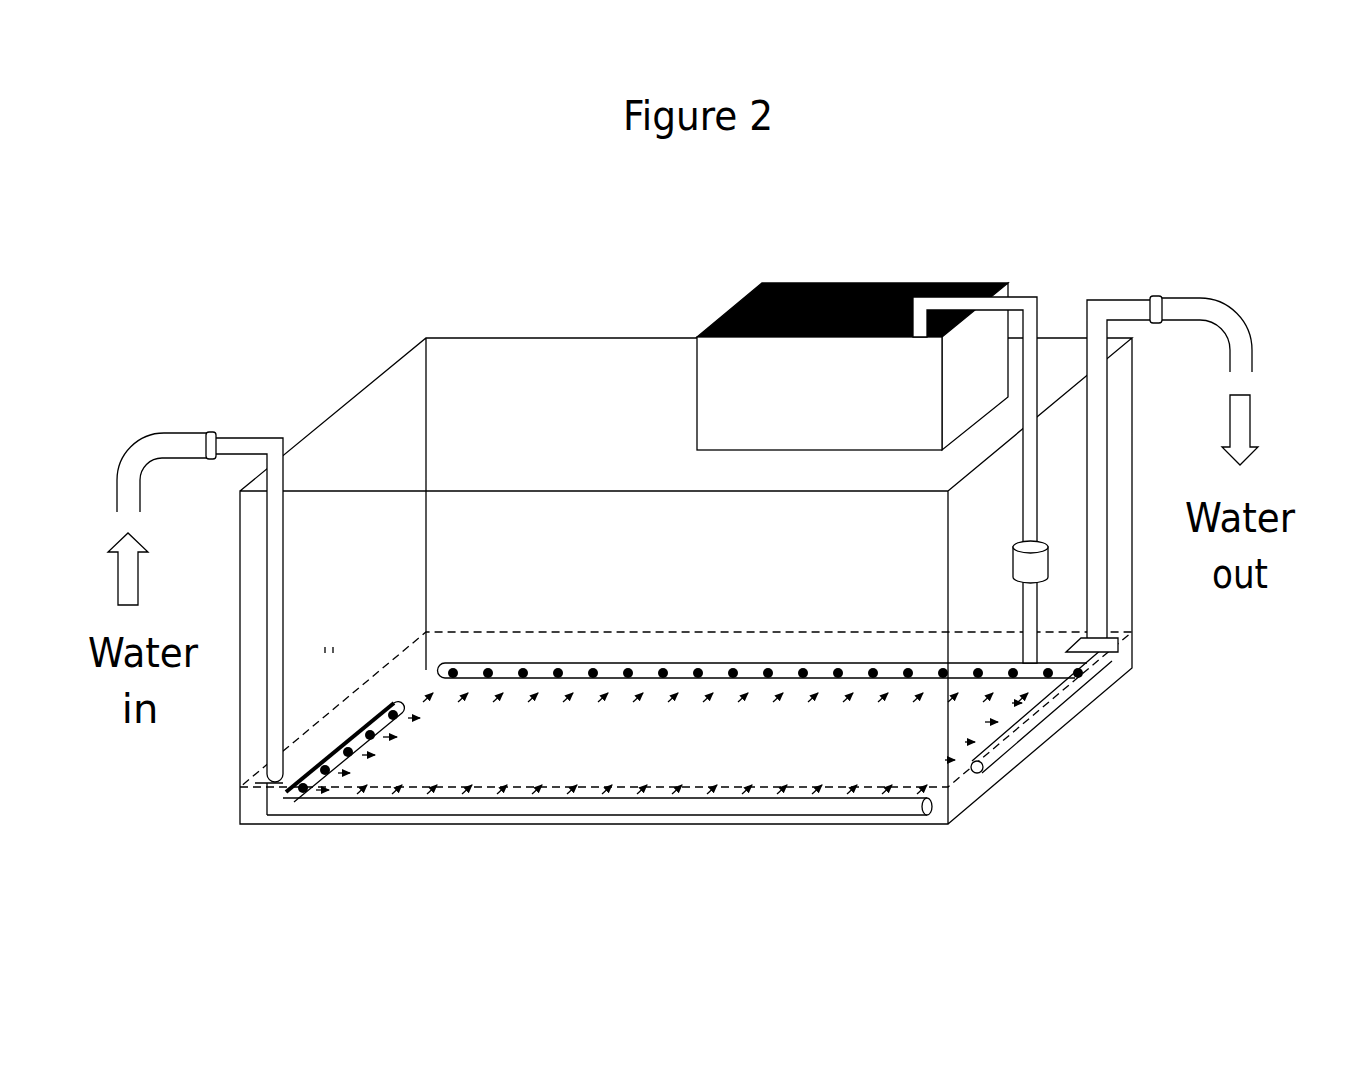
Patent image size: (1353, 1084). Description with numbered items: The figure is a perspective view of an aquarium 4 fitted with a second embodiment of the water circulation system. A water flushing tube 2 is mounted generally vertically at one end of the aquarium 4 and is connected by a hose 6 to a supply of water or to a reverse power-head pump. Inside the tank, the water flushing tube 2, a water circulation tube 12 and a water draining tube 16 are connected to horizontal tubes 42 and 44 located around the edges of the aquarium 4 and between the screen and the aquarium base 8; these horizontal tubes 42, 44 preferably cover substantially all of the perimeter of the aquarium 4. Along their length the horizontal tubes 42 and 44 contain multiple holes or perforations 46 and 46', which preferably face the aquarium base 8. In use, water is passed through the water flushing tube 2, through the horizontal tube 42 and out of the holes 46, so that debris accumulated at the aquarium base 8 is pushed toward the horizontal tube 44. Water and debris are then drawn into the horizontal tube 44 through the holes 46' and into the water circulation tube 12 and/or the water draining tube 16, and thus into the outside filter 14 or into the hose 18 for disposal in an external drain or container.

The water flushing tube 2 is at (250, 436).
The aquarium 4 is at (568, 836).
The hose 6 is at (117, 480).
The aquarium base 8 is at (744, 825).
The water circulation tube 12 is at (1040, 299).
The outside filter 14 is at (867, 283).
The water draining tube 16 is at (1123, 299).
The hose 18 is at (1253, 344).
The horizontal tube 42 is at (889, 806).
The horizontal tube 44 is at (1062, 698).
The holes 46 is at (348, 802).
The holes 46' is at (765, 760).